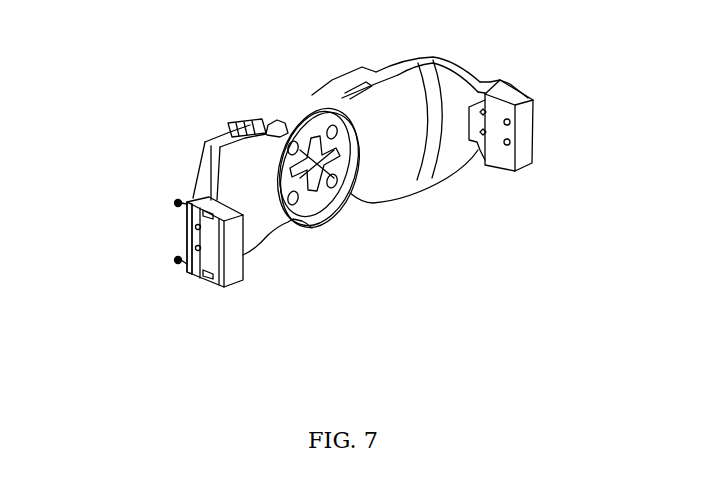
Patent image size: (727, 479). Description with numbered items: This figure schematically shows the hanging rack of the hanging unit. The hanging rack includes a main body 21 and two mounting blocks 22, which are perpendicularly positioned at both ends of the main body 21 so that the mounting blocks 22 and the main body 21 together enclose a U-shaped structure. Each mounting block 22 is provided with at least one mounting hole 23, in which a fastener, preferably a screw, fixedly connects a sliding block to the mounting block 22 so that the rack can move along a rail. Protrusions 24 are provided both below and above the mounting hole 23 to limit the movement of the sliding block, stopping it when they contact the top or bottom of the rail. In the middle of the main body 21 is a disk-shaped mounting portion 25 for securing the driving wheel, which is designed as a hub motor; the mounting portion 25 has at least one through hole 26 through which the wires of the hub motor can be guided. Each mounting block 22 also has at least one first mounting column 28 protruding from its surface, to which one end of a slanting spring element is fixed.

The main body 21 is at (267, 152).
The mounting block 22 is at (534, 98).
The mounting hole 23 is at (225, 288).
The protrusions 24 is at (207, 276).
The mounting portion 25 is at (312, 228).
The through hole 26 is at (340, 203).
The first mounting column 28 is at (175, 259).